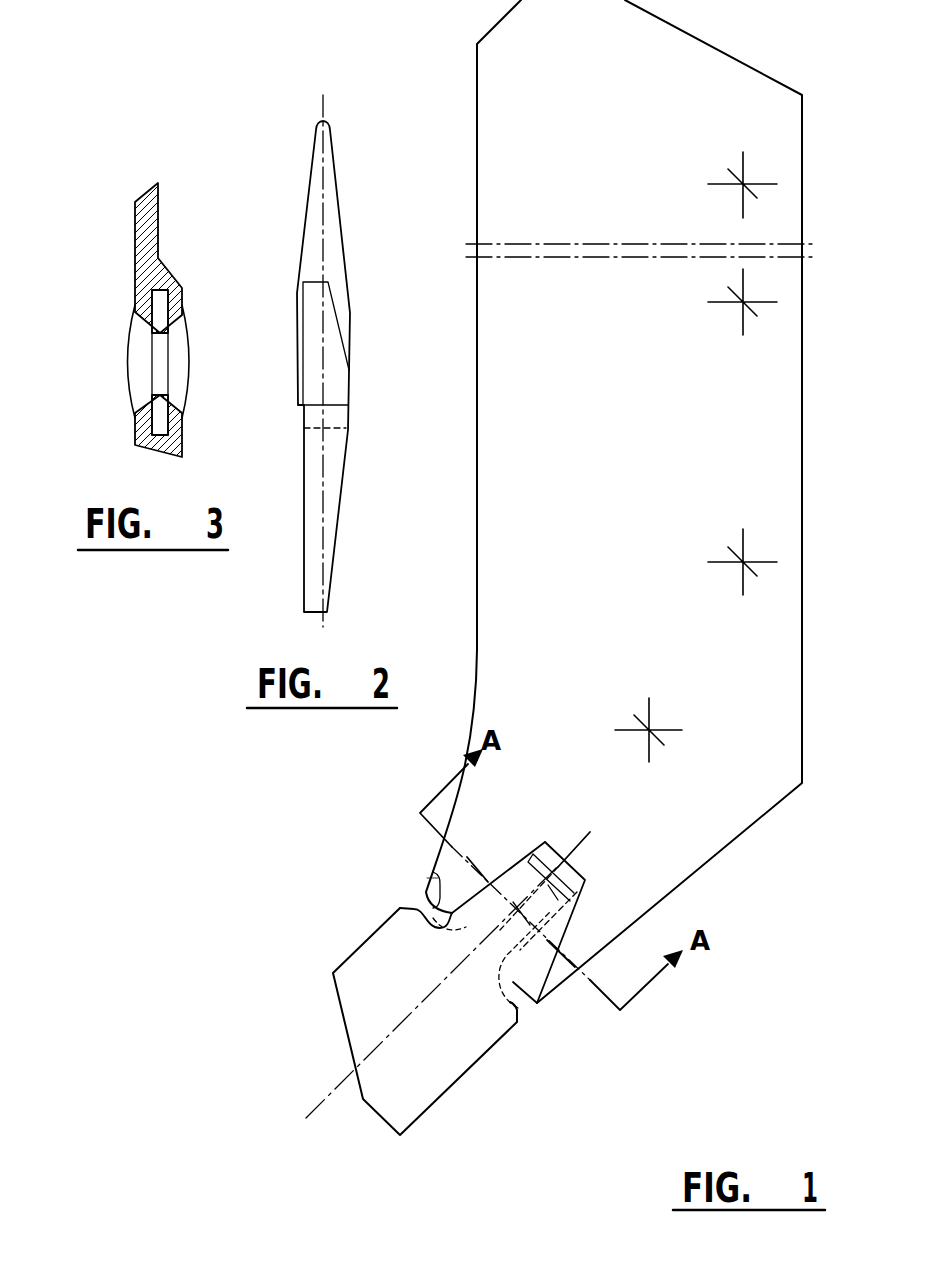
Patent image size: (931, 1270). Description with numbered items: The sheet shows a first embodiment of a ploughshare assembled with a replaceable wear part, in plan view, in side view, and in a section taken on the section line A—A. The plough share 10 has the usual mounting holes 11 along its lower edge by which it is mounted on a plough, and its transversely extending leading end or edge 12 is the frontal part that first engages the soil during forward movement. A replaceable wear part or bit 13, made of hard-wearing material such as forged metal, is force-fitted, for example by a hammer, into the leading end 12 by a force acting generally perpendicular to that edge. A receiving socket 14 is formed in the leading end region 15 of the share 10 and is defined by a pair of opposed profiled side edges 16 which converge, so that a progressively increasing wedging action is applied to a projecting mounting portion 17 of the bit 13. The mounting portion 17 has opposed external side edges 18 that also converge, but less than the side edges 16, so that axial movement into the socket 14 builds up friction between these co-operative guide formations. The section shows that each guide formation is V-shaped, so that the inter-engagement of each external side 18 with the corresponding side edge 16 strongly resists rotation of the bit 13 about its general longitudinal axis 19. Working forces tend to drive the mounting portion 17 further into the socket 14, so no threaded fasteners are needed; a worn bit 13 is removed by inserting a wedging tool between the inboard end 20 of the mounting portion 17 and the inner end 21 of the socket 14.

In FIG. 1, the plough share 10 is at (571, 468).
In FIG. 1, the mounting holes 11 is at (752, 566).
In FIG. 1, the leading end or edge 12 is at (428, 877).
In FIG. 1, the replaceable wear part or bit 13 is at (360, 993).
In FIG. 2, the replaceable wear part or bit 13 is at (358, 508).
In FIG. 1, the receiving socket 14 is at (513, 850).
In FIG. 1, the leading end region 15 is at (590, 943).
In FIG. 3, the profiled side edges of the socket 16 is at (132, 338).
In FIG. 1, the mounting portion 17 is at (574, 905).
In FIG. 1, the external side edges of the mounting portion 18 is at (500, 873).
In FIG. 1, the longitudinal axis 19 is at (328, 1100).
In FIG. 1, the inboard end of the mounting portion 20 is at (543, 843).
In FIG. 1, the inner end of the socket 21 is at (575, 867).